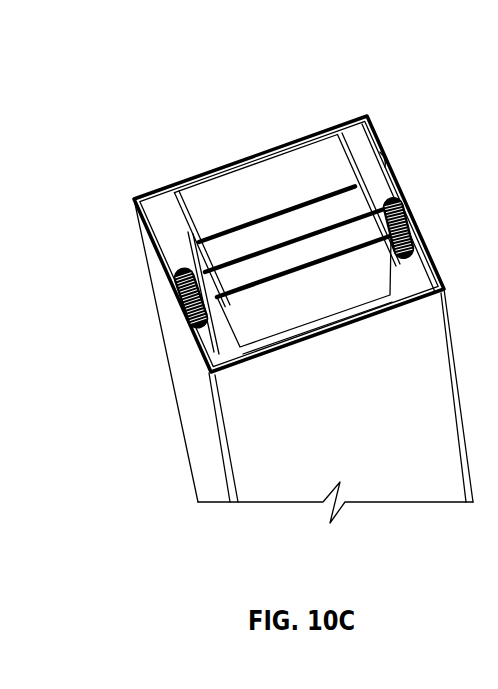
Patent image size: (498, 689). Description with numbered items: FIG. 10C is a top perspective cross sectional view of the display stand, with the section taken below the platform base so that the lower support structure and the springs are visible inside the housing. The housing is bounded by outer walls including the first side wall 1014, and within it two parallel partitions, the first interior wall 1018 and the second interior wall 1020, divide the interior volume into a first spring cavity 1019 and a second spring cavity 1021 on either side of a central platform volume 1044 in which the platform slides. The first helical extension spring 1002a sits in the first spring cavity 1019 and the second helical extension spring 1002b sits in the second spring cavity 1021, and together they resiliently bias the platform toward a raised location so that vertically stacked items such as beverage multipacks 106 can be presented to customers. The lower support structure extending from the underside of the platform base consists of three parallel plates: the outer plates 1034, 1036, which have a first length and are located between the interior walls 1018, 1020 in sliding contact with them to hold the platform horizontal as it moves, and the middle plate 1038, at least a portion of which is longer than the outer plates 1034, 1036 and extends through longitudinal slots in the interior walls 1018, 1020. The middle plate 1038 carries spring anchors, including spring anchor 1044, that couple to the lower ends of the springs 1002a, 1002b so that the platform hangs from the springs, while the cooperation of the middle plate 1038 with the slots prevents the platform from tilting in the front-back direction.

The beverage multipacks 106 is at (428, 252).
The first helical extension spring 1002a is at (181, 267).
The second helical extension spring 1002b is at (392, 200).
The first side wall 1014 is at (193, 410).
The first interior wall 1018 is at (172, 200).
The first spring cavity 1019 is at (155, 195).
The second interior wall 1020 is at (352, 214).
The second spring cavity 1021 is at (378, 156).
The outer plate 1034 is at (287, 210).
The outer plate 1036 is at (316, 264).
The middle plate 1038 is at (335, 215).
The spring anchor 1044 is at (230, 197).